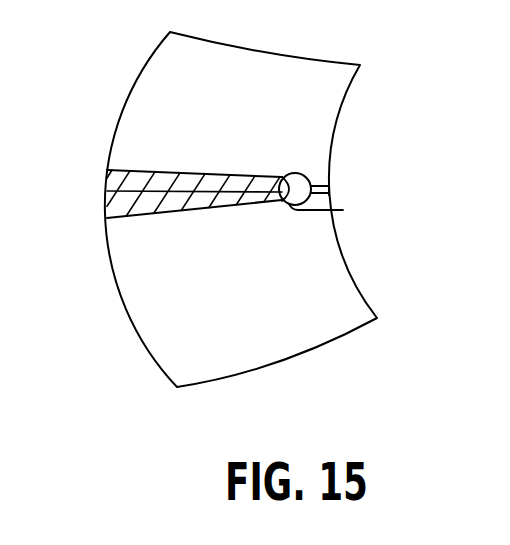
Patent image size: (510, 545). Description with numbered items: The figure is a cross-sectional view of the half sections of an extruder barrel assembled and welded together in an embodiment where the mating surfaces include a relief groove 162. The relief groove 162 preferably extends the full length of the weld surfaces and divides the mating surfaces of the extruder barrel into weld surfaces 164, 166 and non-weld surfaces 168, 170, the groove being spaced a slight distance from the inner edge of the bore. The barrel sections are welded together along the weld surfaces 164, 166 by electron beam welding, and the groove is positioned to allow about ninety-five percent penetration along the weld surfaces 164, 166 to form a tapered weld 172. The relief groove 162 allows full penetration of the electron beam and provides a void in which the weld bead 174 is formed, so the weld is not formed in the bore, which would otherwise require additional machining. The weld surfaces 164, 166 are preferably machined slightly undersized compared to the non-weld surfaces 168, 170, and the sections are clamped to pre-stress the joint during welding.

The relief groove 162 is at (286, 174).
The weld surface 164 is at (108, 170).
The weld surface 166 is at (105, 198).
The non-weld surface 168 is at (320, 184).
The non-weld surface 170 is at (329, 192).
The tapered weld 172 is at (167, 200).
The weld bead 174 is at (300, 173).